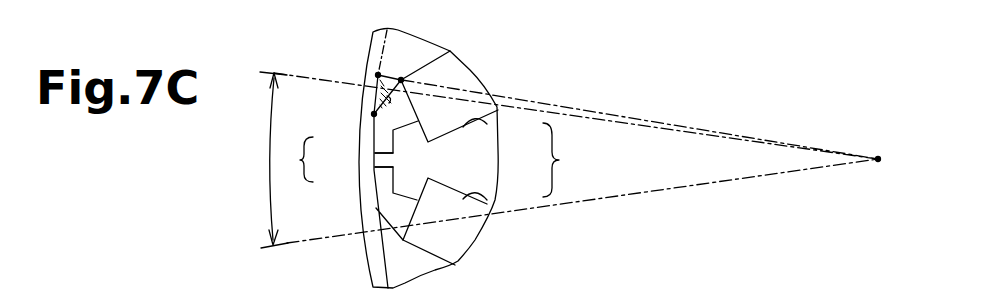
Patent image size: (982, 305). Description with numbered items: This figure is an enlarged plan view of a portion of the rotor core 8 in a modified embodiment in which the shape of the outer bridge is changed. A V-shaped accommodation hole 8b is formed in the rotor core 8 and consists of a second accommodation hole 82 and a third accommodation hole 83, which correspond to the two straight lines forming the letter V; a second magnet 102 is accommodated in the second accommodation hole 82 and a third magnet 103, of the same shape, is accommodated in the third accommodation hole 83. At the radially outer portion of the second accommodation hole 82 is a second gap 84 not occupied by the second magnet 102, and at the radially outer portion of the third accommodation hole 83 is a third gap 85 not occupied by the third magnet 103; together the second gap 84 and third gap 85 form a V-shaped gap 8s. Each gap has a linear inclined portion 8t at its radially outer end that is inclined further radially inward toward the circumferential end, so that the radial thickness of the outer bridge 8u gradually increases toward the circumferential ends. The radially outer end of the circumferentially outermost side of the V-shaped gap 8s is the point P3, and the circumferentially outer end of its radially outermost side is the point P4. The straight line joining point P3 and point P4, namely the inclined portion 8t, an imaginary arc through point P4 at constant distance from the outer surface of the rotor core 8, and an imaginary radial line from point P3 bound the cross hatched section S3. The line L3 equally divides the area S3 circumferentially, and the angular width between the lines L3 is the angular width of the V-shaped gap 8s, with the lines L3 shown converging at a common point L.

The rotor core 8 is at (368, 260).
The V-shaped gap 8s is at (345, 160).
The third gap 85 is at (378, 146).
The second gap 84 is at (378, 175).
The outer bridge 8u is at (372, 194).
The inclined portion 8t is at (378, 104).
The V-shaped accommodation hole 8b is at (570, 160).
The third accommodation hole 83 is at (498, 133).
The second accommodation hole 82 is at (497, 187).
The second magnet 102 is at (463, 241).
The third magnet 103 is at (453, 74).
The point P3 is at (450, 51).
The point P4 is at (373, 115).
The cross hatched section S3 is at (384, 73).
The line L3 is at (617, 120).
The convergence point L is at (876, 143).